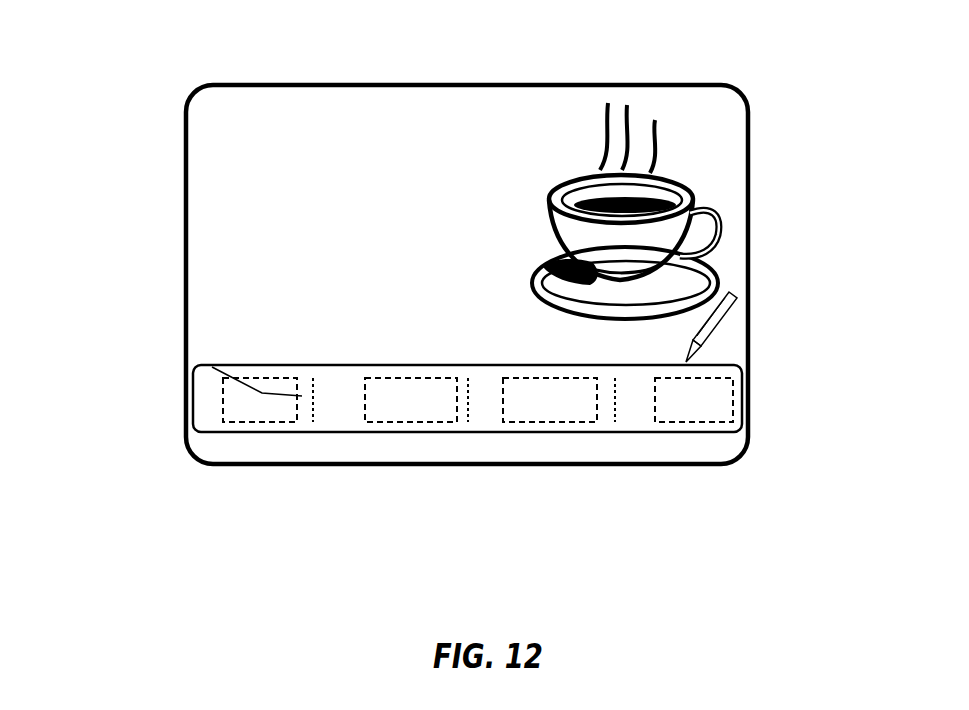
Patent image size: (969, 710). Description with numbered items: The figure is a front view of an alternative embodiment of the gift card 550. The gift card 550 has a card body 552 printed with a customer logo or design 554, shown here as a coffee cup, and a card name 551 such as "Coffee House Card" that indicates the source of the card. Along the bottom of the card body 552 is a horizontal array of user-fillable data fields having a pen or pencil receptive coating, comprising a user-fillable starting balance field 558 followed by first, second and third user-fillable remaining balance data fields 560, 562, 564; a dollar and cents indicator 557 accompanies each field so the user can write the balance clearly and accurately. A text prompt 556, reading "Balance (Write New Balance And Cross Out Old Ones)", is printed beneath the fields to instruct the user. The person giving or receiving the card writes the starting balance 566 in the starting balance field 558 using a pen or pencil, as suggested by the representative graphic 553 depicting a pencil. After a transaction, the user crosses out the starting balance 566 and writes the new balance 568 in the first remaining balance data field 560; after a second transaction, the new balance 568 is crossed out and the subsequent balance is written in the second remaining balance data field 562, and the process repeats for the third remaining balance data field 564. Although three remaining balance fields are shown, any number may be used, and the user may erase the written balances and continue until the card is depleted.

The gift card 550 is at (171, 155).
The card name 551 is at (387, 108).
The card body 552 is at (250, 100).
The representative graphic 553 is at (737, 300).
The customer logo or design 554 is at (632, 115).
The text prompt 556 is at (303, 457).
The dollar and cents indicator 557 is at (203, 414).
The user-fillable starting balance field 558 is at (227, 425).
The first user-fillable remaining balance data field 560 is at (373, 425).
The second user-fillable remaining balance data field 562 is at (512, 425).
The third user-fillable remaining balance data field 564 is at (663, 425).
The starting balance 566 is at (212, 367).
The new balance 568 is at (418, 425).